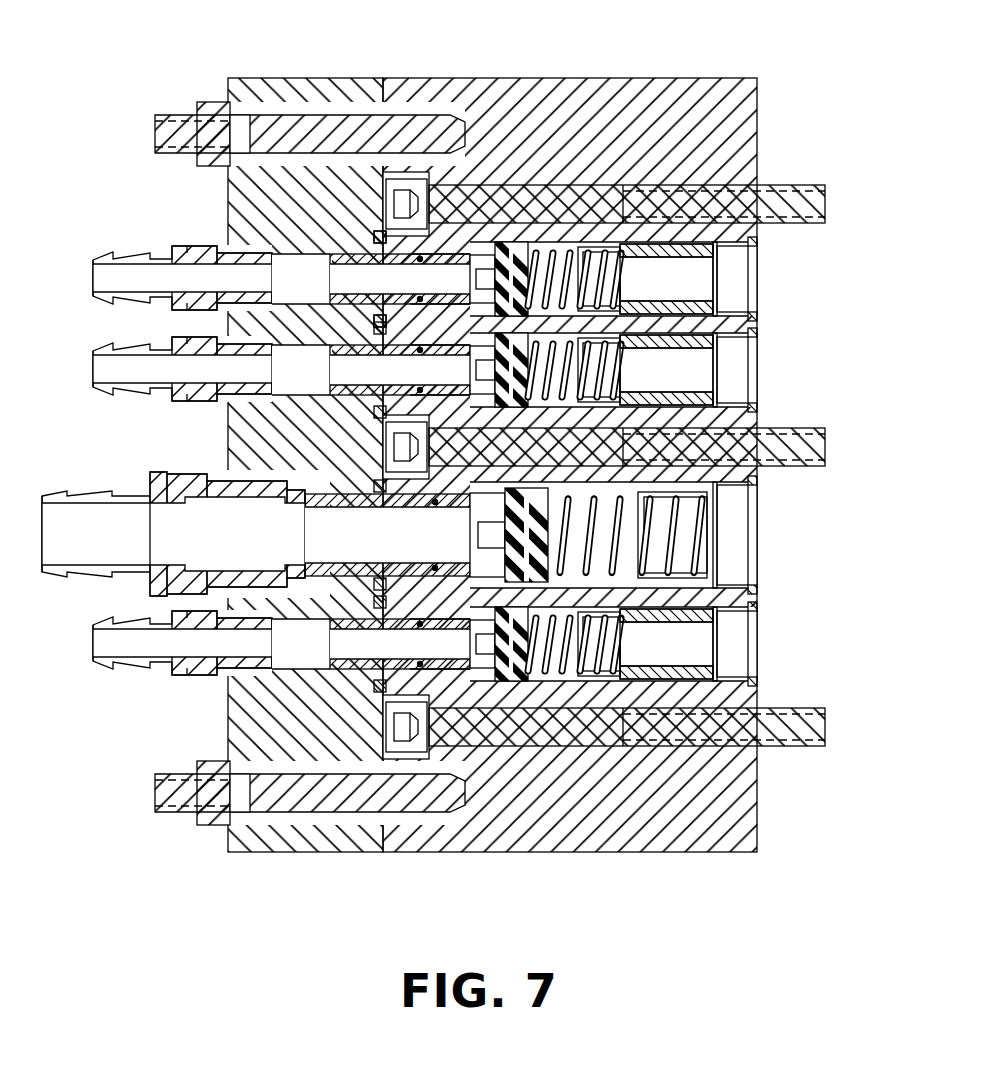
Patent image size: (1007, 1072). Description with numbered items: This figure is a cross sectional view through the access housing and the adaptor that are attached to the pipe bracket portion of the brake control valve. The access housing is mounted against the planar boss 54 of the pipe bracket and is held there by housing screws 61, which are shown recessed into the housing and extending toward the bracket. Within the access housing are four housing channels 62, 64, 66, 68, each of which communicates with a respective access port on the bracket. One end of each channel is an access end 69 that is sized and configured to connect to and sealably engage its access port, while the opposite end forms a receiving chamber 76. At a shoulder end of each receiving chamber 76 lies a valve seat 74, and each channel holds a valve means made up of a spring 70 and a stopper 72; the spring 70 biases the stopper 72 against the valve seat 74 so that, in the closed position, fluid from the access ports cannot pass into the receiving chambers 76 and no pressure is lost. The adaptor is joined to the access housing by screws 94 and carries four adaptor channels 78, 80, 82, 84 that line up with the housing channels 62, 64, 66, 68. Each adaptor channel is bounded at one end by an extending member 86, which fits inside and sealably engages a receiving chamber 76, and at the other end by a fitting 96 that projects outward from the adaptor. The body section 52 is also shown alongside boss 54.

The right body block 52 is at (740, 106).
The boss 54 is at (300, 88).
The housing screws 61 is at (768, 202).
The housing channel 62 is at (497, 655).
The housing channel 64 is at (496, 540).
The housing channel 66 is at (497, 381).
The housing channel 68 is at (499, 178).
The access end 69 is at (752, 292).
The spring 70 is at (668, 168).
The stopper 72 is at (574, 166).
The valve seat 74 is at (498, 162).
The receiving chamber 76 is at (411, 174).
The adaptor channel 78 is at (318, 657).
The adaptor channel 80 is at (317, 512).
The adaptor channel 82 is at (319, 383).
The adaptor channel 84 is at (321, 258).
The extending member 86 is at (529, 178).
The screws 94 is at (170, 128).
The fitting 96 is at (110, 250).